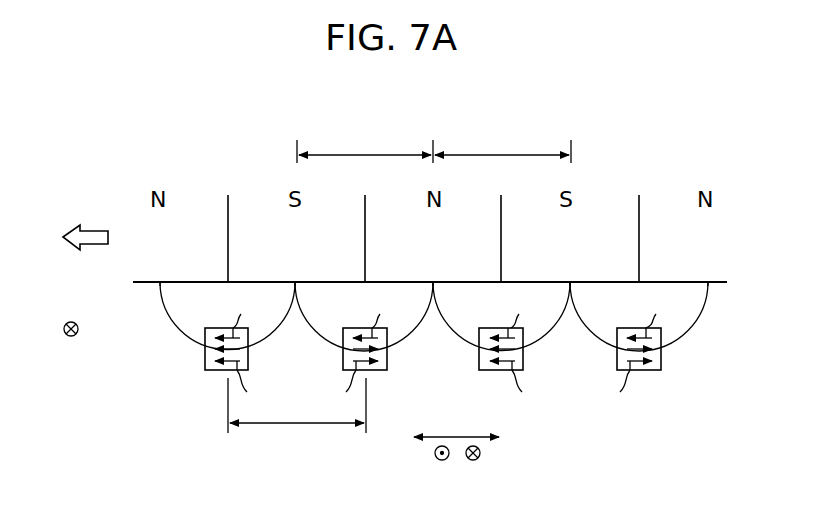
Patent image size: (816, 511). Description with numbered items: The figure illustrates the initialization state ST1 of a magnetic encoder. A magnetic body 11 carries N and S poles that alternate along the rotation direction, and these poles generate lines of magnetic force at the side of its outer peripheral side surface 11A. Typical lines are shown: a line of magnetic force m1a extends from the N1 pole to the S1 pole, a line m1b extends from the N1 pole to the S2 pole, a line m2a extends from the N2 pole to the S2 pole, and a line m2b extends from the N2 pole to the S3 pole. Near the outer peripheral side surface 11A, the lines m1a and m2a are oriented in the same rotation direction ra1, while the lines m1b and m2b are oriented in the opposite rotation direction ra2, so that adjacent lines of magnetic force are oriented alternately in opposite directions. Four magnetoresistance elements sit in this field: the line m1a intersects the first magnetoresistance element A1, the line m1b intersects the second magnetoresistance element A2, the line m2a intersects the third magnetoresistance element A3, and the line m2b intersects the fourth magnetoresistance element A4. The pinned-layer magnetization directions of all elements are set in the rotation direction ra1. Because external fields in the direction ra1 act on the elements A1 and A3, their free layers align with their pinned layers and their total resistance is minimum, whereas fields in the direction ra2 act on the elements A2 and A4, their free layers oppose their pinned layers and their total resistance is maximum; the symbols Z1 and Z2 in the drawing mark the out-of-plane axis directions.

The magnetic body 11 is at (105, 201).
The outer peripheral side surface 11A is at (724, 284).
The initialization state ST1 is at (119, 144).
The S1 pole S1 is at (157, 271).
The N1 pole N1 is at (294, 271).
The S2 pole S2 is at (432, 271).
The N2 pole N2 is at (568, 271).
The S3 pole S3 is at (706, 271).
The line of magnetic force m1a is at (196, 340).
The line of magnetic force m1b is at (332, 340).
The line of magnetic force m2a is at (529, 340).
The line of magnetic force m2b is at (670, 340).
The first magnetoresistance element A1 is at (218, 370).
The second magnetoresistance element A2 is at (376, 370).
The third magnetoresistance element A3 is at (492, 370).
The fourth magnetoresistance element A4 is at (369, 310).
The rotation direction ra1 is at (439, 436).
The rotation direction ra2 is at (519, 436).
The axis direction (out of page) Z1 is at (441, 467).
The axis direction (into page) Z2 is at (472, 467).